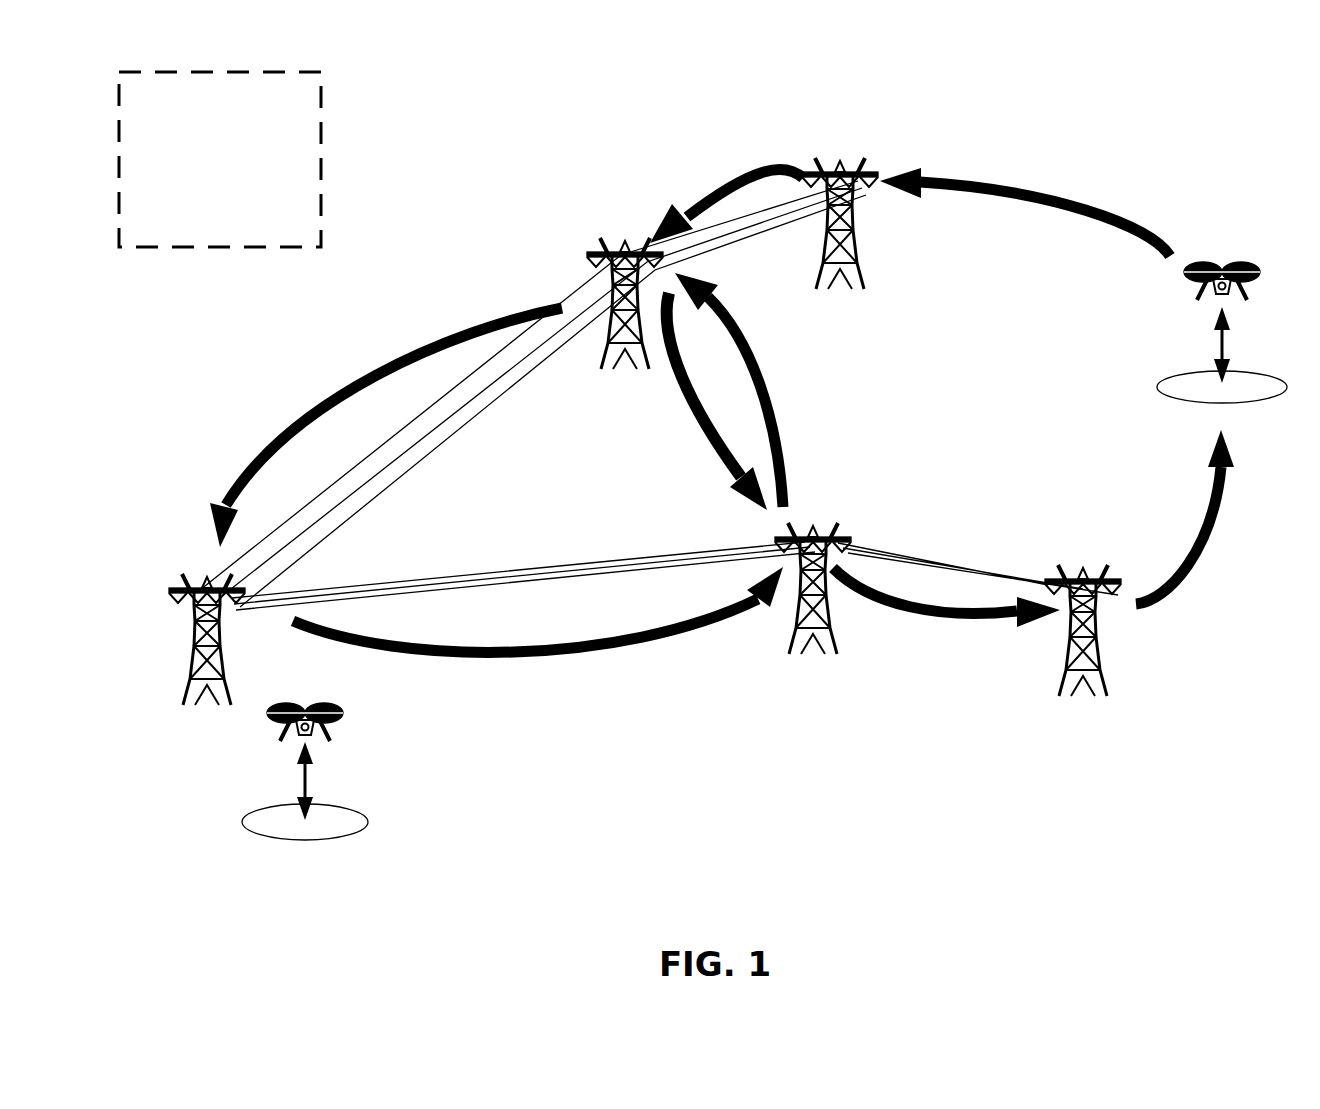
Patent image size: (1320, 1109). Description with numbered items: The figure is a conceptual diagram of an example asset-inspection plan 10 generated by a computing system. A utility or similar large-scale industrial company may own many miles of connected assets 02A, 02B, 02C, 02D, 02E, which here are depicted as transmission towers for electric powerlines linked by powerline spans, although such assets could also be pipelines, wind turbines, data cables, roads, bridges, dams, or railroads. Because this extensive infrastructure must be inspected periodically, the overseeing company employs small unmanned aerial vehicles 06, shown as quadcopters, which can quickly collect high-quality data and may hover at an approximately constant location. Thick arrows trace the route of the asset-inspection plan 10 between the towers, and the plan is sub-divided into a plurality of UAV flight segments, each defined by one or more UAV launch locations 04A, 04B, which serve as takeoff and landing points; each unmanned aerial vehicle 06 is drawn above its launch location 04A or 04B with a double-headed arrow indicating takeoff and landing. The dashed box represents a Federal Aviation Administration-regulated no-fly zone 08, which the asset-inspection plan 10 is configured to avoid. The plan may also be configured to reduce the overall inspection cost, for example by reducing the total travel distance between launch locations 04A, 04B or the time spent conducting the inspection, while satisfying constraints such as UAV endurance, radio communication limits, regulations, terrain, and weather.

The asset 02A is at (207, 657).
The asset 02B is at (813, 604).
The asset 02C is at (625, 320).
The asset 02D is at (840, 240).
The asset 02E is at (1083, 647).
The UAV launch location 04A is at (305, 807).
The UAV launch location 04B is at (1222, 370).
The unmanned aerial vehicle 06 is at (305, 695).
The no-fly zone 08 is at (220, 159).
The asset-inspection plan 10 is at (569, 653).